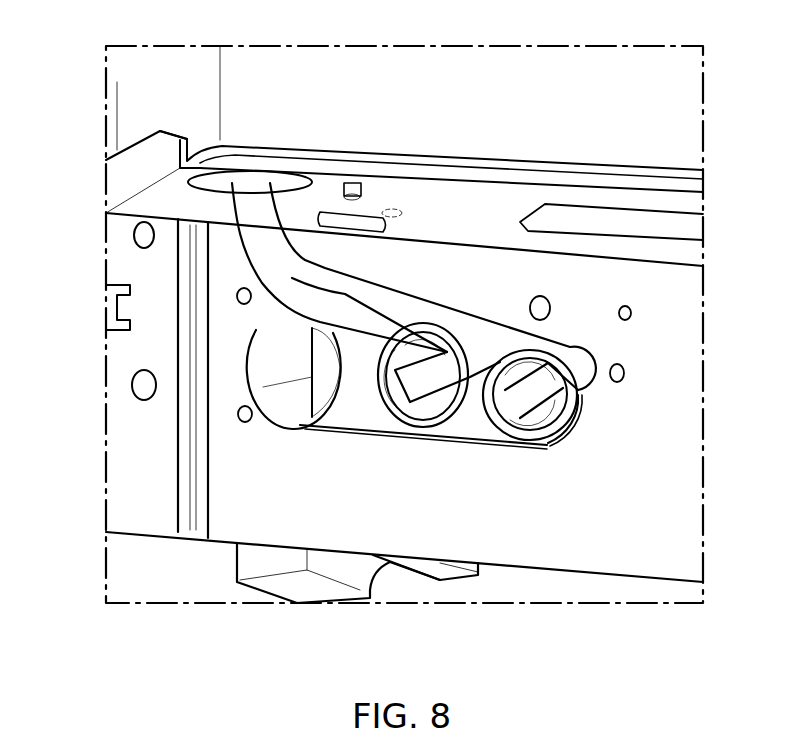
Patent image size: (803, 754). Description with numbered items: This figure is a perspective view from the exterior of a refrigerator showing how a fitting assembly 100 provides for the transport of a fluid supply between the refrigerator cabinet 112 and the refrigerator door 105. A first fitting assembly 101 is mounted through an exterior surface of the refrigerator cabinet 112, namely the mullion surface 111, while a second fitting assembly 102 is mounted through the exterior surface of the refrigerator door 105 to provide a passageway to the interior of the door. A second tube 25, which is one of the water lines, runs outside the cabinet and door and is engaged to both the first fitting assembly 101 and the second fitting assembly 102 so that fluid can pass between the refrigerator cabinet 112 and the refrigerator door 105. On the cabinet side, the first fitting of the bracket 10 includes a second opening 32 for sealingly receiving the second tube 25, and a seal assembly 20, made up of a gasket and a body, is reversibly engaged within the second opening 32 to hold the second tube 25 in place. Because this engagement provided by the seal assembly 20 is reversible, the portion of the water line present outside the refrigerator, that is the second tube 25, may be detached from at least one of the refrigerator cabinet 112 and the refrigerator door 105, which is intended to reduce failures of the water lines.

The fitting assembly 100 is at (696, 122).
The refrigerator door 105 is at (405, 70).
The second fitting assembly 102 is at (165, 215).
The refrigerator cabinet 112 is at (130, 478).
The mullion surface 111 is at (517, 540).
The bracket 10 is at (468, 427).
The first fitting assembly 101 is at (353, 437).
The seal assembly 20 is at (563, 433).
The second opening 32 is at (593, 412).
The second tube 25 is at (393, 320).